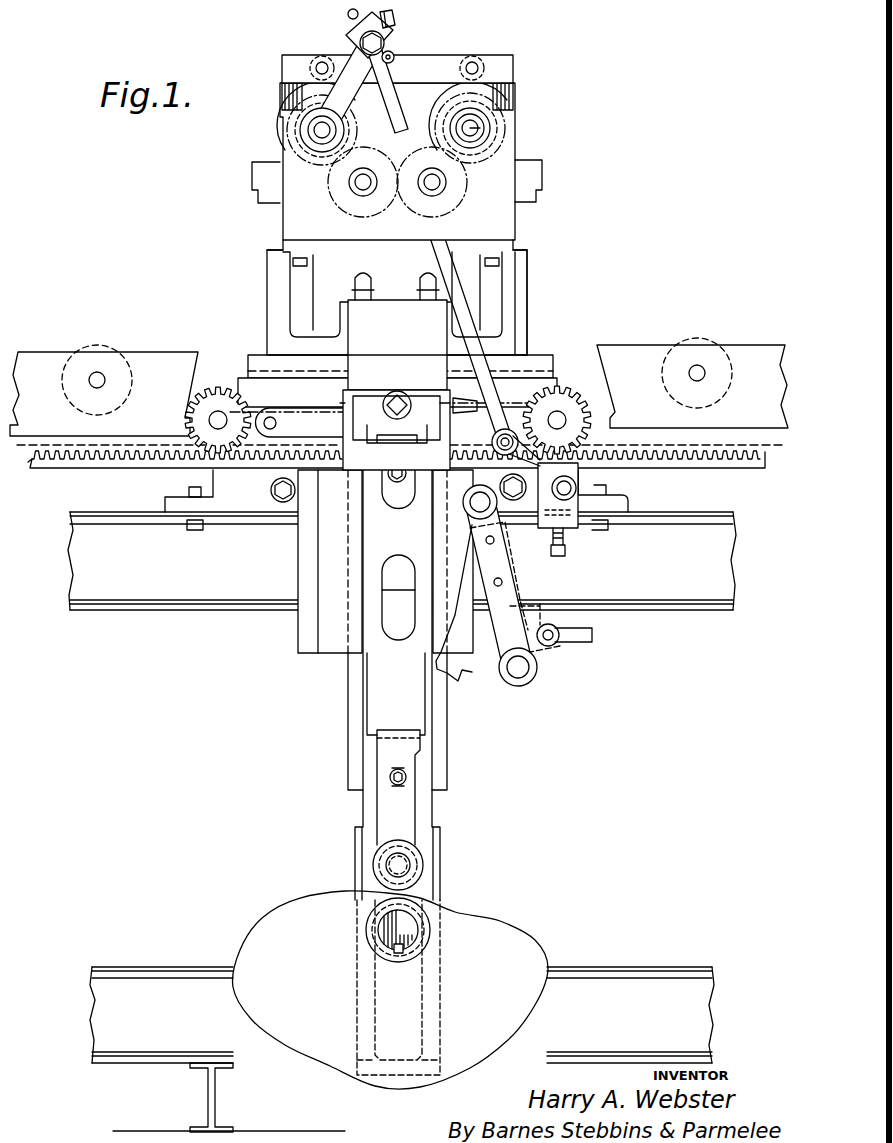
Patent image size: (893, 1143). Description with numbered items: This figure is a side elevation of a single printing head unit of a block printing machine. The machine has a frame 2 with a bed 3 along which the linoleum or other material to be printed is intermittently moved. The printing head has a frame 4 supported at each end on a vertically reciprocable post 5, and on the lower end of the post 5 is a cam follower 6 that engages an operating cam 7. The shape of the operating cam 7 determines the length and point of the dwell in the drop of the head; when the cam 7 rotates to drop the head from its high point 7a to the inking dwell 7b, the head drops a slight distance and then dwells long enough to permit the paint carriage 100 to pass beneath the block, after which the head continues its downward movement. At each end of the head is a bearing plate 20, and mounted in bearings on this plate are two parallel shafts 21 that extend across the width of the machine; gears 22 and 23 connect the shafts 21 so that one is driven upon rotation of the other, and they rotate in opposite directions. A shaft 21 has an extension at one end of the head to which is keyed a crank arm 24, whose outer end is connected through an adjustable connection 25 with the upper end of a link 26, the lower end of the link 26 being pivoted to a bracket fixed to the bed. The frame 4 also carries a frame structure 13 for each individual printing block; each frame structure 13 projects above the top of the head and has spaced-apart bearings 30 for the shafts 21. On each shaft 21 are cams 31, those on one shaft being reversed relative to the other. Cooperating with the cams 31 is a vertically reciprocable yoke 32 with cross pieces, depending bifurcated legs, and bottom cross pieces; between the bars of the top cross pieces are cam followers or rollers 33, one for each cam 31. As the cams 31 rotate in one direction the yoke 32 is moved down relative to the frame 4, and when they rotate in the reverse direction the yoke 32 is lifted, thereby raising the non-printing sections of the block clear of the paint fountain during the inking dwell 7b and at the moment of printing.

The frame 2 is at (402, 561).
The bed 3 is at (230, 500).
The frame 4 is at (516, 287).
The vertically reciprocable post 5 is at (397, 680).
The cam follower 6 is at (423, 866).
The operating cam 7 is at (463, 940).
The high point 7a is at (242, 997).
The inking dwell 7b is at (396, 1086).
The frame structure 13 is at (278, 285).
The bearing plate 20 is at (290, 206).
The shafts 21 is at (318, 131).
The gear 22 is at (321, 156).
The gear 23 is at (346, 196).
The crank arm 24 is at (352, 70).
The adjustable connection 25 is at (385, 32).
The link 26 is at (478, 352).
The bearings 30 is at (484, 112).
The cams 31 is at (318, 88).
The yoke 32 is at (397, 69).
The cam follower 33 is at (473, 61).
The paint carriage 100 is at (630, 362).